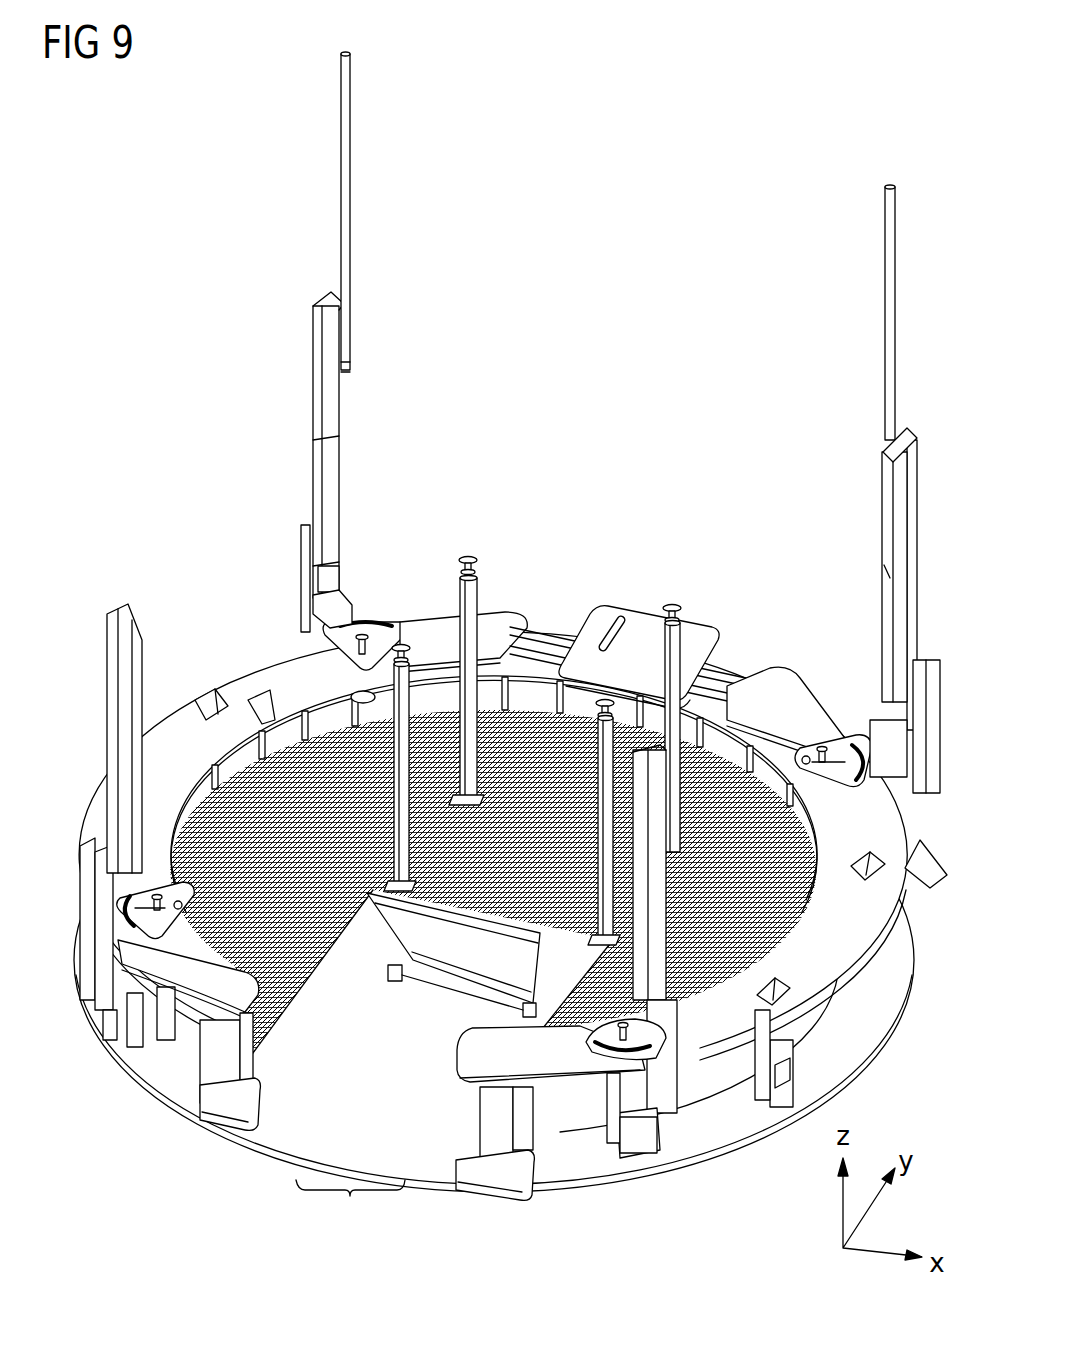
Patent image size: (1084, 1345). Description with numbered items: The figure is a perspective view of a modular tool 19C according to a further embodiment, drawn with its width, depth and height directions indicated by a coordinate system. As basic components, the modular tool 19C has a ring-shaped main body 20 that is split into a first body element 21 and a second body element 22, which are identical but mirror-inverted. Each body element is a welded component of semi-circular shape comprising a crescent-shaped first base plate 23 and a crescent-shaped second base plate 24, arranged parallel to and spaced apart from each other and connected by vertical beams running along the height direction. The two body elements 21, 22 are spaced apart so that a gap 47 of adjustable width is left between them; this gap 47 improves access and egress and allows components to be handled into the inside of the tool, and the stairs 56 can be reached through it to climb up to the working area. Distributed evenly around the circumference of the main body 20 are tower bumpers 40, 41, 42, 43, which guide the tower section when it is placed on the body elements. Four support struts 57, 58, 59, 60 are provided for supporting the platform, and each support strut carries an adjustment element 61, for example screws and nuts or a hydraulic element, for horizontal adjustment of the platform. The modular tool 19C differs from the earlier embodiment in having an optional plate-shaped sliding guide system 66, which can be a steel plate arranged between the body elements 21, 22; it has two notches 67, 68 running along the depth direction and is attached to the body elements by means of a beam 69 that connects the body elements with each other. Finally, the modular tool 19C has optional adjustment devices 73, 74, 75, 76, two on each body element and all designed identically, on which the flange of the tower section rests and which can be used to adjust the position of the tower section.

The modular tool 19C is at (645, 208).
The ring-shaped main body 20 is at (350, 1208).
The first body element 21 is at (248, 1131).
The second body element 22 is at (450, 1166).
The first base plate 23 is at (110, 795).
The second base plate 24 is at (143, 1088).
The tower bumper 40 is at (893, 432).
The tower bumper 41 is at (647, 940).
The tower bumper 42 is at (118, 617).
The tower bumper 43 is at (342, 298).
The gap 47 is at (381, 1113).
The stairs 56 is at (490, 971).
The support strut 57 is at (727, 662).
The support strut 58 is at (604, 788).
The support strut 59 is at (399, 766).
The support strut 60 is at (468, 612).
The adjustment element 61 is at (472, 557).
The sliding guide system 66 is at (648, 594).
The notch 67 is at (639, 617).
The notch 68 is at (681, 648).
The beam 69 is at (545, 638).
The adjustment device 73 is at (838, 752).
The adjustment device 74 is at (590, 1028).
The adjustment device 75 is at (145, 918).
The adjustment device 76 is at (373, 638).